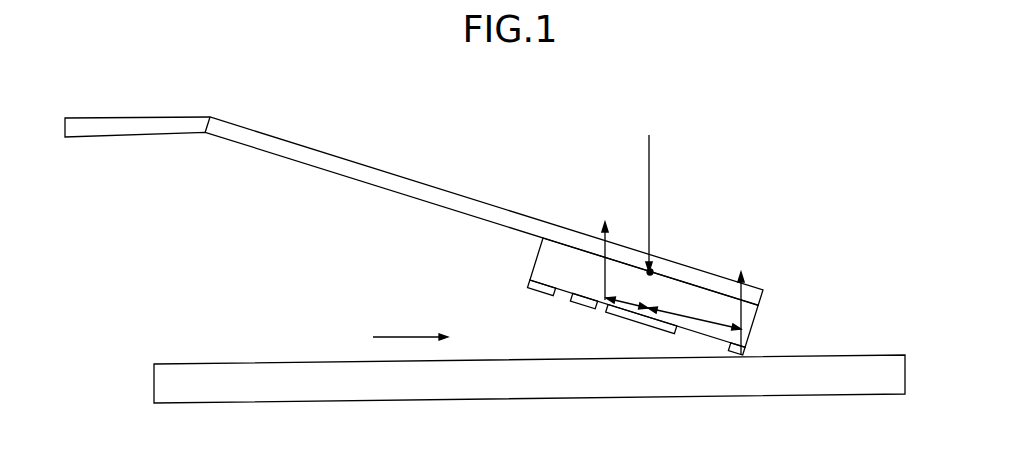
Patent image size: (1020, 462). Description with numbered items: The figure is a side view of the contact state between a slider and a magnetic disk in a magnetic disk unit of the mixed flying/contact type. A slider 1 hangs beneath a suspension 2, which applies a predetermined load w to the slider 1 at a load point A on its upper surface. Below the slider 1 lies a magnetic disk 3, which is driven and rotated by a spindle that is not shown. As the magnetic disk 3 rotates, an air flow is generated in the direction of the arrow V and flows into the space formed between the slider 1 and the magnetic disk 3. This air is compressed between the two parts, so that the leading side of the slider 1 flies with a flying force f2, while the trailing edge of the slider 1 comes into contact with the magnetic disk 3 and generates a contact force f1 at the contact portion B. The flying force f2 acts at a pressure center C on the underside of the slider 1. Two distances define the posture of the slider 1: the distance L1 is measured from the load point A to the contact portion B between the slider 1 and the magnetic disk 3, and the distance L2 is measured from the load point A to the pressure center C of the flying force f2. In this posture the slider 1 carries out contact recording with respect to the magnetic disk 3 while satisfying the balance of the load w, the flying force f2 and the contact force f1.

The slider 1 is at (555, 262).
The suspension 2 is at (475, 210).
The magnetic disk 3 is at (235, 387).
The load point A is at (653, 268).
The contact portion B is at (743, 374).
The pressure center C is at (600, 312).
The air flow direction V is at (410, 321).
The load w is at (647, 193).
The contact force f1 is at (739, 302).
The flying force f2 is at (603, 250).
The distance from load point to contact portion L1 is at (694, 314).
The distance from load point to pressure center L2 is at (627, 292).